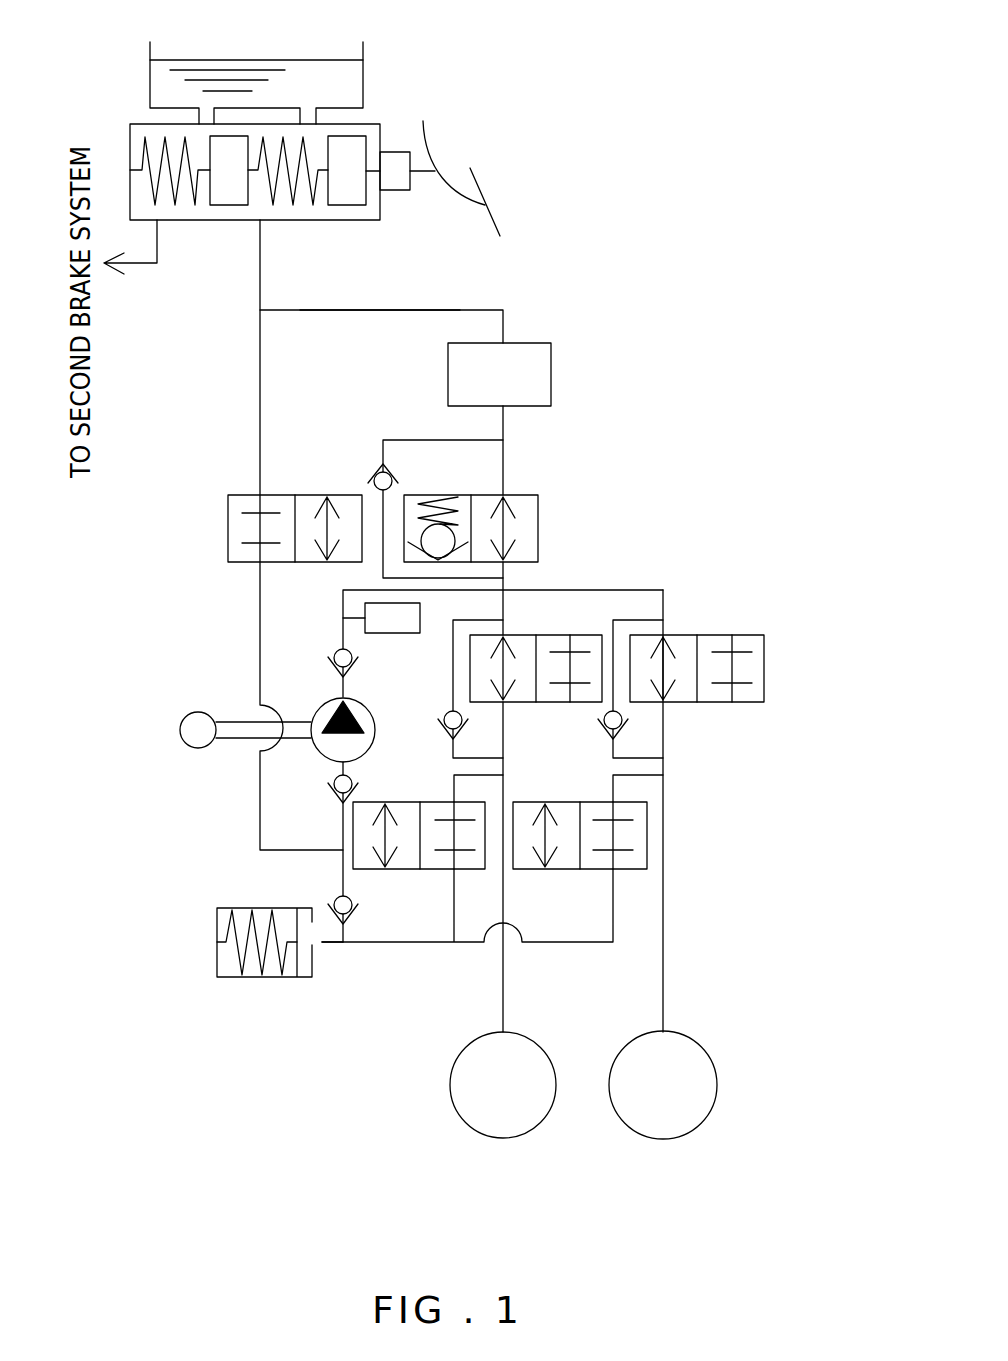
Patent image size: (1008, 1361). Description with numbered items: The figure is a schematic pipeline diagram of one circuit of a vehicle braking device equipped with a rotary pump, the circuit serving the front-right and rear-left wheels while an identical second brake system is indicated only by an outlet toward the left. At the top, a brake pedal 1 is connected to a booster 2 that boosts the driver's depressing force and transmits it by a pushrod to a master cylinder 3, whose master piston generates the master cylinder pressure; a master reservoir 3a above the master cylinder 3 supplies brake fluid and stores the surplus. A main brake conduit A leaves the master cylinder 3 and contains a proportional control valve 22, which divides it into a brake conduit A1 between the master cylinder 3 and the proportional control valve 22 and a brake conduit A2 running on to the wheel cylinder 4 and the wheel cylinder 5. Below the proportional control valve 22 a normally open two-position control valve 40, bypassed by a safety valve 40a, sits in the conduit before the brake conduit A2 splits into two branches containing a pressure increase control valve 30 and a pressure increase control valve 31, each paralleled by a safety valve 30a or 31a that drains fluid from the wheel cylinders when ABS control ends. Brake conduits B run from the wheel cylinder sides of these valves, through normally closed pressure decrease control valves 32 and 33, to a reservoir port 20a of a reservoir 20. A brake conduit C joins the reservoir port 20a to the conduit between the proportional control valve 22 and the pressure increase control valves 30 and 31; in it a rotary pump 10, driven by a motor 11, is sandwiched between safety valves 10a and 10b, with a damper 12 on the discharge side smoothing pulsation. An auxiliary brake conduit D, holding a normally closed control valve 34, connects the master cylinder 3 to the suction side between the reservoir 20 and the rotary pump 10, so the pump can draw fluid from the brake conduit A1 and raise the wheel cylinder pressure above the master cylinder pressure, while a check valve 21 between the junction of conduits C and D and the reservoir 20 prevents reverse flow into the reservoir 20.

The brake pedal 1 is at (478, 181).
The booster 2 is at (397, 191).
The master cylinder 3 is at (114, 138).
The master reservoir 3a is at (196, 62).
The wheel cylinder 4 is at (455, 1110).
The wheel cylinder 5 is at (618, 1114).
The rotary pump 10 is at (318, 706).
The safety valve 10a is at (333, 797).
The safety valve 10b is at (332, 660).
The motor 11 is at (182, 718).
The damper 12 is at (395, 634).
The reservoir 20 is at (217, 957).
The reservoir port 20a is at (322, 942).
The check valve 21 is at (353, 917).
The proportional control valve 22 is at (552, 372).
The pressure increase control valve 30 is at (575, 635).
The safety valve 30a is at (443, 730).
The pressure increase control valve 31 is at (722, 703).
The safety valve 31a is at (602, 727).
The pressure decrease control valve 32 is at (433, 802).
The pressure decrease control valve 33 is at (647, 830).
The control valve 34 is at (228, 530).
The control valve 40 is at (538, 520).
The safety valve 40a is at (377, 468).
The brake conduit A is at (243, 291).
The brake conduit A1 is at (478, 310).
The brake conduit A2 is at (665, 600).
The brake conduit B is at (455, 907).
The brake conduit C is at (343, 602).
The brake conduit D is at (260, 428).